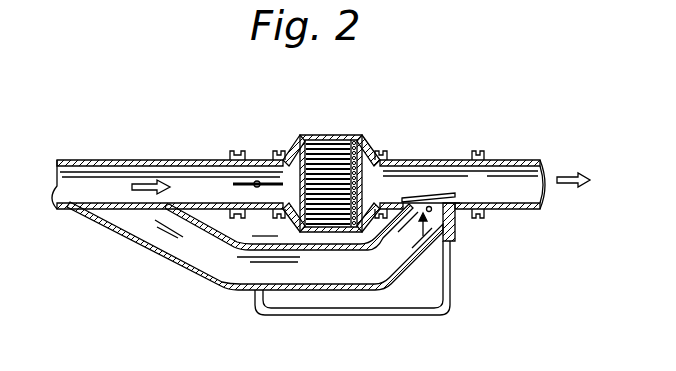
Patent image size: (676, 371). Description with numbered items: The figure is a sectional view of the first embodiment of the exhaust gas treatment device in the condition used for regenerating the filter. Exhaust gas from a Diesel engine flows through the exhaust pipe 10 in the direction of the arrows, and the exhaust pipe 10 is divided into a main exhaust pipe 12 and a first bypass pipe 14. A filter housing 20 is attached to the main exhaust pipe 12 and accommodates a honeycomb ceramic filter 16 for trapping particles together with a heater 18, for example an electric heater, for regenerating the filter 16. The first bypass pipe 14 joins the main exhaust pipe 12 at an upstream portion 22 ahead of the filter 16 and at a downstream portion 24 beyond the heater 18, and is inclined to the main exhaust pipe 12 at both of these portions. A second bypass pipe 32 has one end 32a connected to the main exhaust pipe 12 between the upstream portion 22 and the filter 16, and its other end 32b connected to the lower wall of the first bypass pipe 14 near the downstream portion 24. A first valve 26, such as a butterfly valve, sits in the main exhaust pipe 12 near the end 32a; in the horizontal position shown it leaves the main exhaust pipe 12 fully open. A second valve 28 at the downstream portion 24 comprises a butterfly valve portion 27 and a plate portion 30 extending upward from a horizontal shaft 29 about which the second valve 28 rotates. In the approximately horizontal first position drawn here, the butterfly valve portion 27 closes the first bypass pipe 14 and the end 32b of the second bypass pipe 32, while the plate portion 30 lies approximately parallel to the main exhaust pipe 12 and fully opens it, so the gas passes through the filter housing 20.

The exhaust pipe 10 is at (72, 160).
The main exhaust pipe 12 is at (199, 233).
The first bypass pipe 14 is at (207, 282).
The honeycomb ceramic filter 16 is at (322, 136).
The heater 18 is at (355, 136).
The filter housing 20 is at (282, 156).
The upstream portion 22 is at (101, 230).
The downstream portion 24 is at (477, 221).
The first valve 26 is at (248, 183).
The butterfly valve portion 27 is at (411, 198).
The second valve 28 is at (424, 238).
The horizontal shaft 29 is at (430, 206).
The plate portion 30 is at (453, 196).
The second bypass pipe 32 is at (393, 315).
The one end of second bypass pipe 32a is at (253, 212).
The other end of second bypass pipe 32b is at (451, 242).